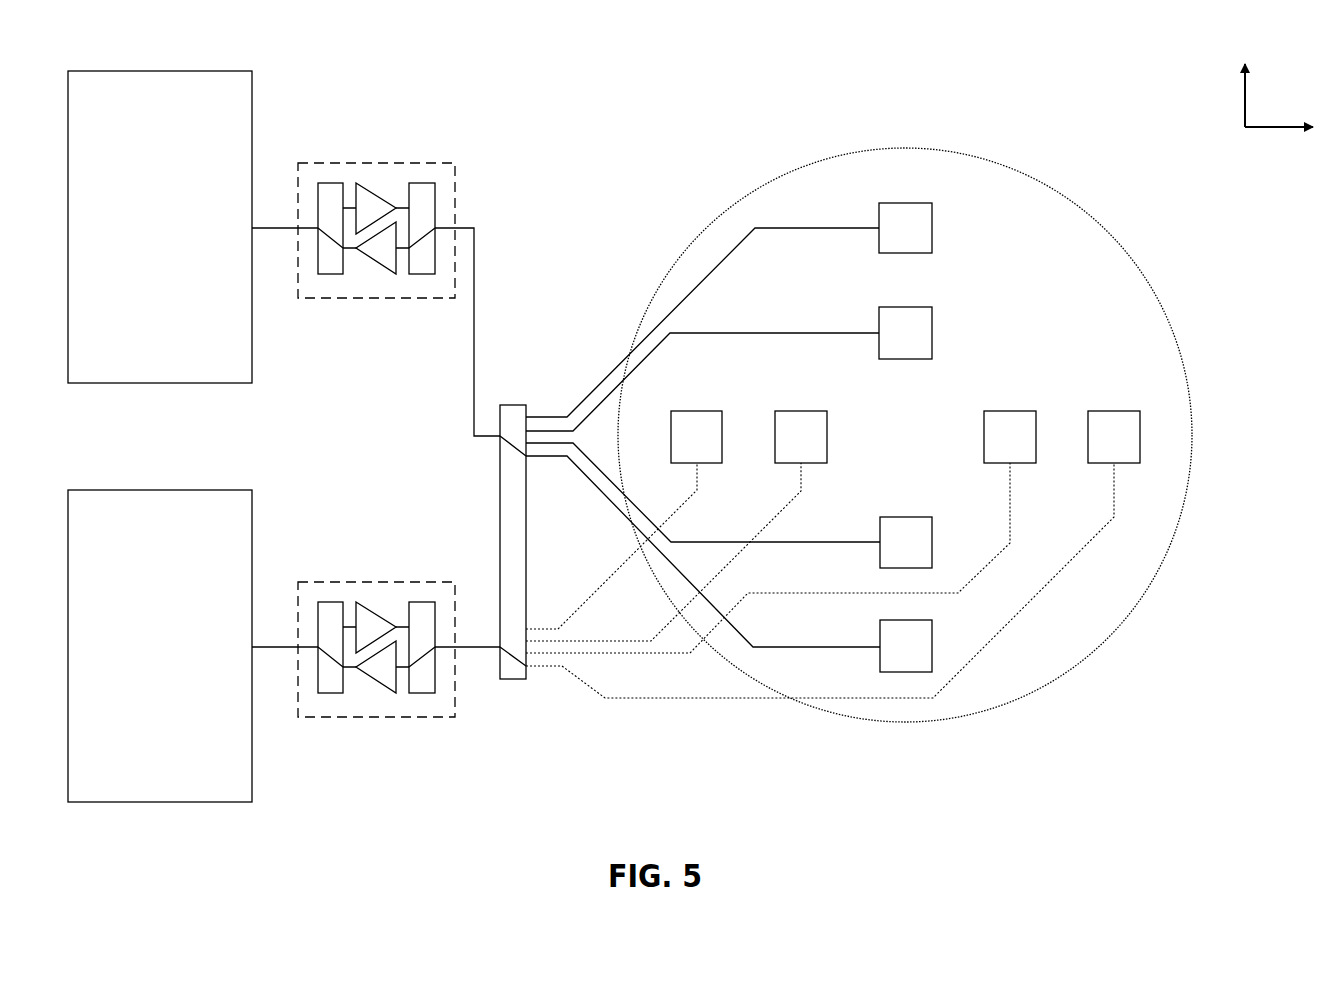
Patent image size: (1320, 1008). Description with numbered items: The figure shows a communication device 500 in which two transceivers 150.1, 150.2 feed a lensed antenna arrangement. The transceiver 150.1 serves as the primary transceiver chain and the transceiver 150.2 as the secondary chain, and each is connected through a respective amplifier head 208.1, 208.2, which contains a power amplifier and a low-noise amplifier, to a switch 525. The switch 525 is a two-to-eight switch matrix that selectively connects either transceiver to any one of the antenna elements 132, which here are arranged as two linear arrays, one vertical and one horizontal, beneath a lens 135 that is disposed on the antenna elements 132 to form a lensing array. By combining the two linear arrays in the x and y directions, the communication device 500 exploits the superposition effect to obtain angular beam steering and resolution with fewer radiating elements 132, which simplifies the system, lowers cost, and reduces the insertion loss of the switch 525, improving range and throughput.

The transceiver 150.1 is at (193, 227).
The transceiver 150.2 is at (193, 646).
The amplifier head 208.1 is at (377, 298).
The amplifier head 208.2 is at (376, 581).
The switch 525 is at (512, 679).
The lens 135 is at (1063, 195).
The antenna elements 132 is at (915, 203).
The communication device 500 is at (1237, 808).